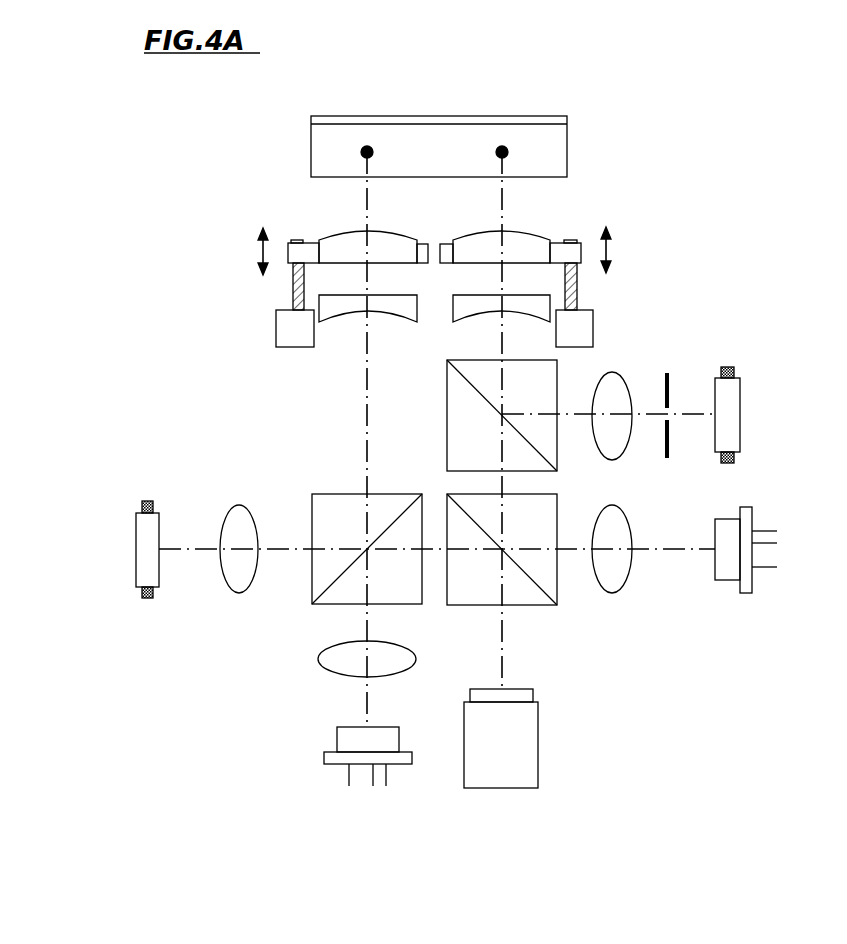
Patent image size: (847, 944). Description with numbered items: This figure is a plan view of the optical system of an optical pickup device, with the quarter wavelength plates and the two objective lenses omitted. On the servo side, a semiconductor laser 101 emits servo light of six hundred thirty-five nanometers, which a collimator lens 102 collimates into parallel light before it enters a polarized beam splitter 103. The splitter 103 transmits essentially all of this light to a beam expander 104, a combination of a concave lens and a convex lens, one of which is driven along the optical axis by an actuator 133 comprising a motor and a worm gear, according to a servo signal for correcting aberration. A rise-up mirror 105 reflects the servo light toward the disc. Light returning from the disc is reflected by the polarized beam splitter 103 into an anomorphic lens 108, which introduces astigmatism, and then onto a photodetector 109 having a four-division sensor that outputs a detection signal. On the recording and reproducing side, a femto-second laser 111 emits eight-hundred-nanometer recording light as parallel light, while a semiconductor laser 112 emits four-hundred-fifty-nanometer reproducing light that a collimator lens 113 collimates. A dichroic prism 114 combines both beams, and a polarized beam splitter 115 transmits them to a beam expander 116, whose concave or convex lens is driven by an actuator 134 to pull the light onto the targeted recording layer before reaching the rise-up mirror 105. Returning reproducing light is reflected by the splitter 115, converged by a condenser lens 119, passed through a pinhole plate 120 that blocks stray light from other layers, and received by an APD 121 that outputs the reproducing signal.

The semiconductor laser 101 is at (360, 784).
The collimator lens 102 is at (325, 680).
The polarized beam splitter 103 is at (337, 503).
The beam expander 104 is at (338, 224).
The rise-up mirror 105 is at (325, 152).
The anomorphic lens 108 is at (237, 518).
The photodetector 109 is at (153, 603).
The femto-second laser 111 is at (518, 780).
The semiconductor laser 112 is at (763, 580).
The collimator lens 113 is at (615, 580).
The dichroic prism 114 is at (532, 600).
The polarized beam splitter 115 is at (457, 428).
The beam expander 116 is at (543, 227).
The condenser lens 119 is at (615, 452).
The pinhole plate 120 is at (677, 373).
The APD 121 is at (743, 363).
The actuator 133 is at (265, 310).
The actuator 134 is at (598, 302).